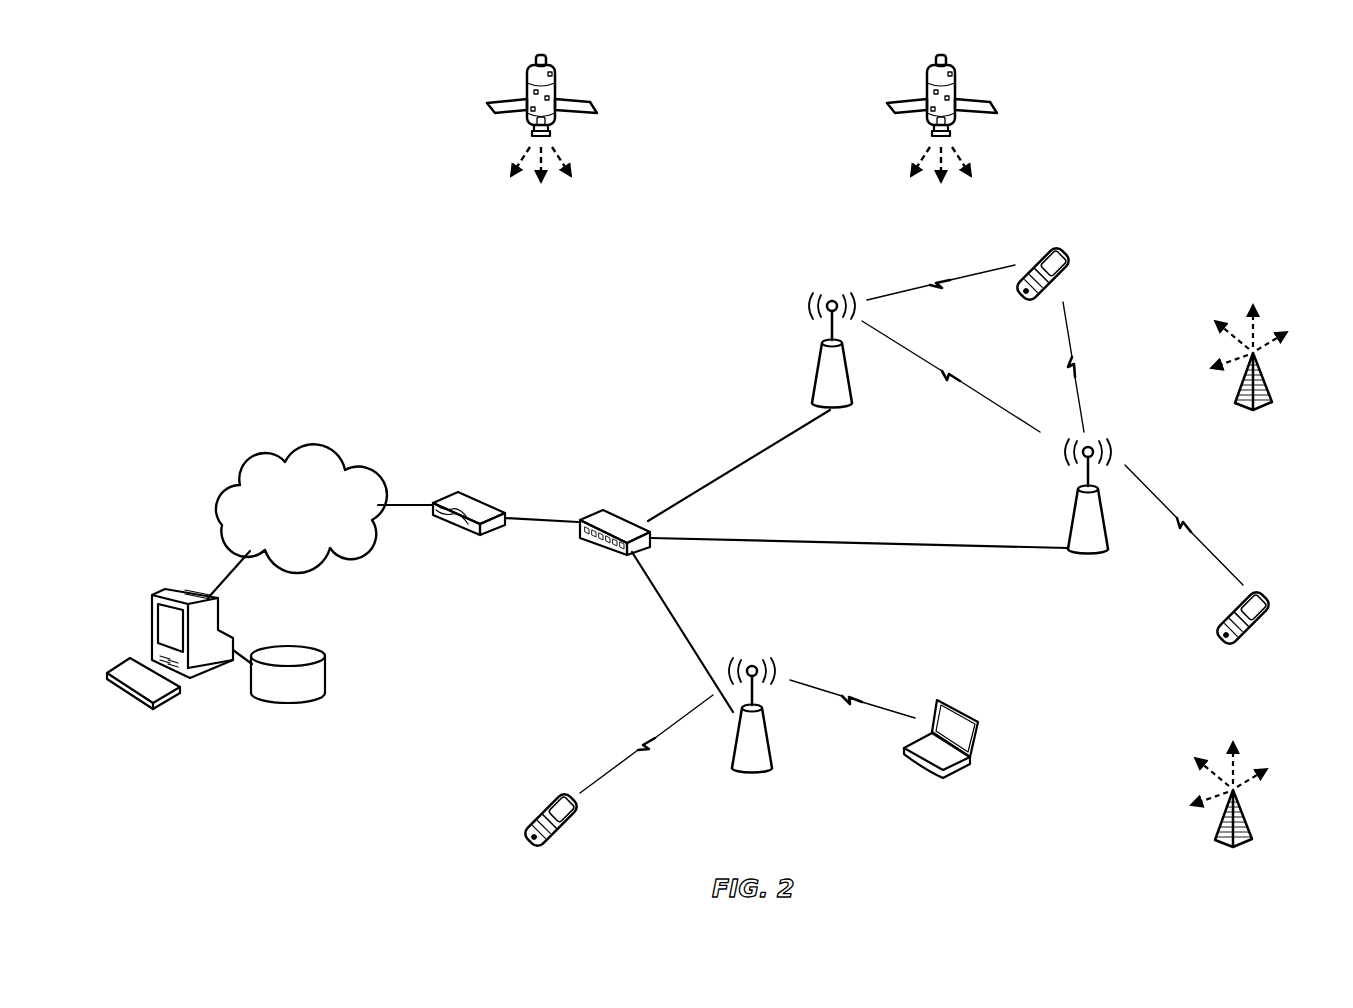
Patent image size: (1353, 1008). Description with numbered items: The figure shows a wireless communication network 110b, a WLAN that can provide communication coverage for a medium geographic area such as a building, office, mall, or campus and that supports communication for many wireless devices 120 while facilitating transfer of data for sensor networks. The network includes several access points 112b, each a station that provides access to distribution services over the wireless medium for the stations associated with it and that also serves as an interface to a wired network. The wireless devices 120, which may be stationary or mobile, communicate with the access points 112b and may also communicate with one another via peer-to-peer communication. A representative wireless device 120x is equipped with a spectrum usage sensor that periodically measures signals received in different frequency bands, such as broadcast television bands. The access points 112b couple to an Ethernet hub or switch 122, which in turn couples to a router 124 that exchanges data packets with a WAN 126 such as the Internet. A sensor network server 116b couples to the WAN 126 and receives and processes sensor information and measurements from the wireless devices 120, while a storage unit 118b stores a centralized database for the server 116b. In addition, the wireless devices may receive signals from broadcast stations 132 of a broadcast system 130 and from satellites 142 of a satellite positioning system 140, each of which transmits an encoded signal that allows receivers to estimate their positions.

The wireless communication network 110b is at (764, 264).
The access point 112b is at (813, 385).
The sensor network server 116b is at (186, 595).
The storage unit 118b is at (280, 645).
The wireless device 120 is at (1058, 250).
The wireless device 120x is at (562, 793).
The Ethernet hub or switch 122 is at (616, 514).
The router 124 is at (478, 500).
The WAN 126 is at (272, 453).
The broadcast system 130 is at (1289, 297).
The broadcast station 132 is at (1286, 380).
The satellite positioning system 140 is at (467, 97).
The satellite 142 is at (556, 102).